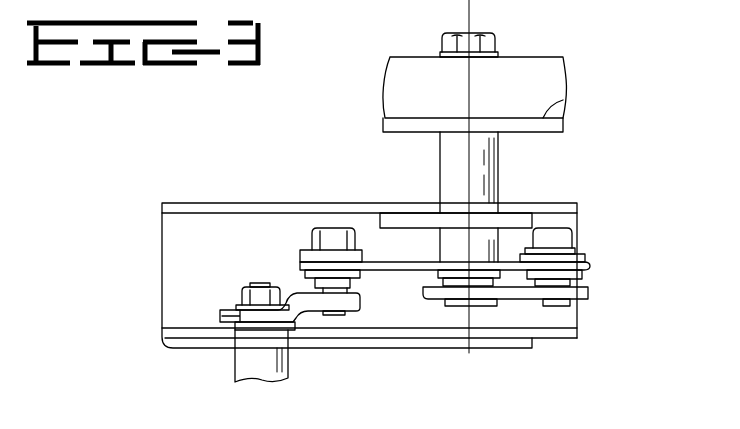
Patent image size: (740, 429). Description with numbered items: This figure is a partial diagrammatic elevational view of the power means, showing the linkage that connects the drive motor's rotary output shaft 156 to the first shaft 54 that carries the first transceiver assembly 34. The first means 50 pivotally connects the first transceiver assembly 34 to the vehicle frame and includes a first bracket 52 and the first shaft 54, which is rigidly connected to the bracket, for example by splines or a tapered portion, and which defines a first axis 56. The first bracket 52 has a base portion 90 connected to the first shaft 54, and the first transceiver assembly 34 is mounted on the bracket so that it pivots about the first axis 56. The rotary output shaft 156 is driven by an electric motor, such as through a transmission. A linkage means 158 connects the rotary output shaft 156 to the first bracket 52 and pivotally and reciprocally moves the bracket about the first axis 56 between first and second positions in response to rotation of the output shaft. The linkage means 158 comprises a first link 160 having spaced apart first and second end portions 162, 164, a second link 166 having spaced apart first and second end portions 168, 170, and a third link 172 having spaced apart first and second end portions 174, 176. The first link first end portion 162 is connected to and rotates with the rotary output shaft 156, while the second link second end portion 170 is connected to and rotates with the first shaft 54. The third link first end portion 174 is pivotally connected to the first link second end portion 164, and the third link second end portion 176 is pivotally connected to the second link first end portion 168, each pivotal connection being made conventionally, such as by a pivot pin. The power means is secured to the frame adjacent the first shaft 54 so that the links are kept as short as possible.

The first transceiver assembly 34 is at (370, 93).
The first means 50 is at (374, 156).
The first bracket 52 is at (563, 123).
The first shaft 54 is at (488, 163).
The first axis 56 is at (472, 14).
The base portion 90 is at (563, 100).
The rotary output shaft 156 is at (233, 363).
The linkage means 158 is at (210, 259).
The first link 160 is at (293, 318).
The first link first end portion 162 is at (240, 315).
The first link second end portion 164 is at (347, 302).
The second link 166 is at (502, 297).
The second link first end portion 168 is at (435, 290).
The second link second end portion 170 is at (578, 292).
The third link 172 is at (408, 268).
The third link first end portion 174 is at (327, 267).
The third link second end portion 176 is at (568, 267).